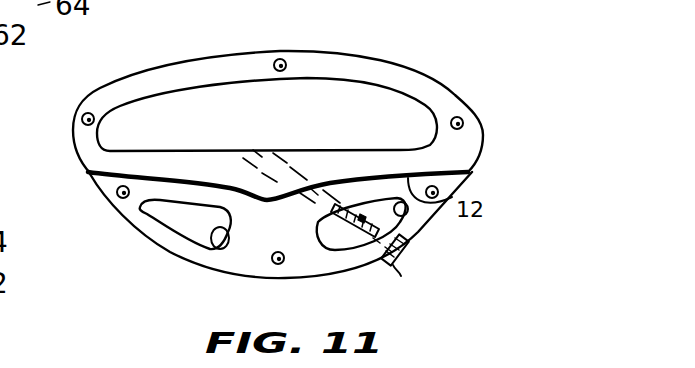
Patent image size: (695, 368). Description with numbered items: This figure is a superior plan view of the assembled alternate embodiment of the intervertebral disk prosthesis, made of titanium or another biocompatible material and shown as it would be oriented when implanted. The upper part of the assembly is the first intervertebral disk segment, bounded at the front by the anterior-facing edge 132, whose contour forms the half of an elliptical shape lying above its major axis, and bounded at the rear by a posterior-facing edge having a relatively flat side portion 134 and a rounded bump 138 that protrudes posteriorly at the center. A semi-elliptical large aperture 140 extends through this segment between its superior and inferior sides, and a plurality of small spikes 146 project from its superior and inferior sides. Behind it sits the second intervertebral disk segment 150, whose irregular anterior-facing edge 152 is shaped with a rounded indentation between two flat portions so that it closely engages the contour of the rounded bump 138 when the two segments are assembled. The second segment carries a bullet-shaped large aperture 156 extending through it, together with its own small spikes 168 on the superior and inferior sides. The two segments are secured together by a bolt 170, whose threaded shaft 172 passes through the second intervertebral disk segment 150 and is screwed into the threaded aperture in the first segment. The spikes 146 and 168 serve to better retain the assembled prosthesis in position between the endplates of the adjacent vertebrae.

The anterior-facing edge 132 is at (388, 66).
The flat side portion 134 is at (139, 178).
The rounded bump 138 is at (280, 190).
The large aperture 140 is at (201, 90).
The small spikes 146 is at (88, 112).
The second intervertebral disk segment 150 is at (168, 260).
The anterior-facing edge 152 is at (267, 200).
The large aperture 156 is at (217, 250).
The small spikes 168 is at (113, 198).
The bolt 170 is at (371, 207).
The threaded shaft 172 is at (244, 152).